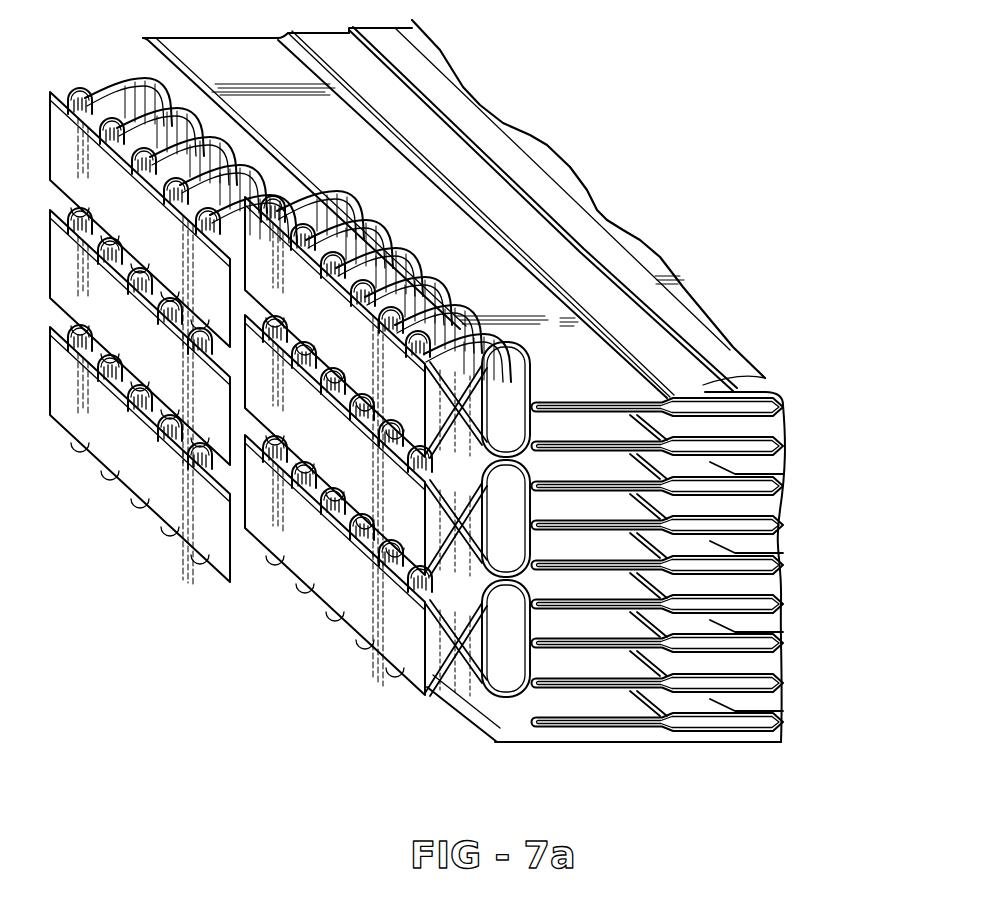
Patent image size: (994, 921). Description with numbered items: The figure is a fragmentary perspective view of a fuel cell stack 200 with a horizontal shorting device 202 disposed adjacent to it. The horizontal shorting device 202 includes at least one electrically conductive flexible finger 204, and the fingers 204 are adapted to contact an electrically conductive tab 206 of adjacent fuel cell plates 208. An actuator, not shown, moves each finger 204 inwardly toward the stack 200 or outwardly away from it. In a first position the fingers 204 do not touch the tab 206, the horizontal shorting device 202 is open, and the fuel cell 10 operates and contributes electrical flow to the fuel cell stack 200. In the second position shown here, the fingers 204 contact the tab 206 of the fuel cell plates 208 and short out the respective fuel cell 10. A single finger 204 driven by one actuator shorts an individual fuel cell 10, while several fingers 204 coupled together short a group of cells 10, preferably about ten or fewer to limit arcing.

The fuel cell stack 200 is at (623, 148).
The horizontal shorting device 202 is at (273, 570).
The electrically conductive flexible finger 204 is at (452, 668).
The electrically conductive tab 206 is at (540, 402).
The fuel cell plate 208 is at (705, 385).
The fuel cell 10 is at (792, 518).